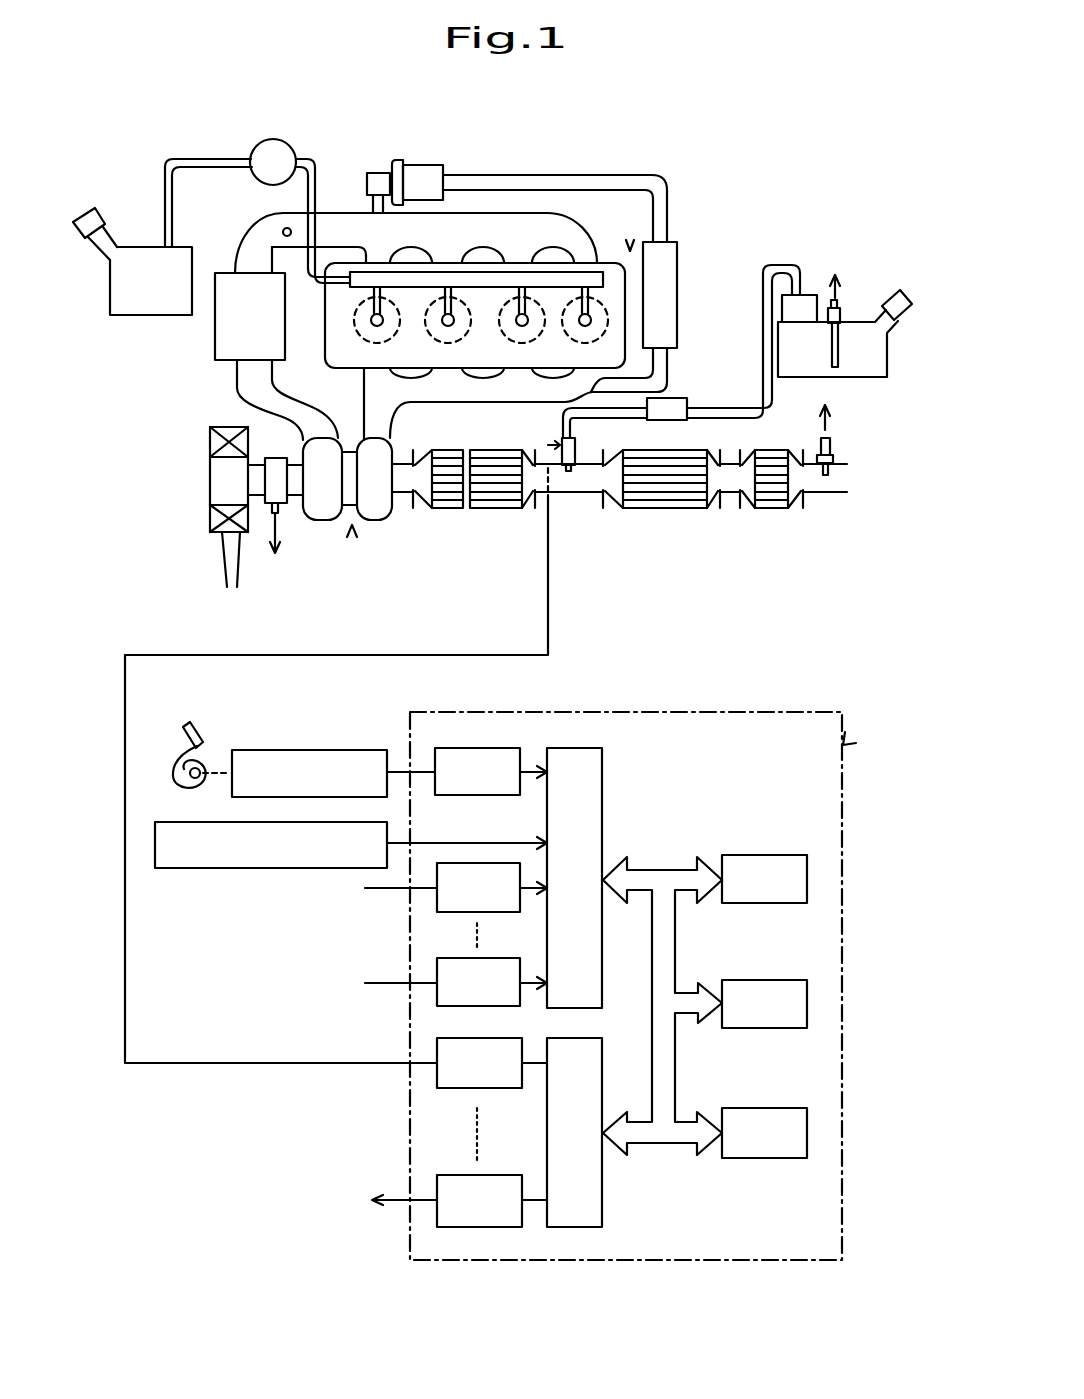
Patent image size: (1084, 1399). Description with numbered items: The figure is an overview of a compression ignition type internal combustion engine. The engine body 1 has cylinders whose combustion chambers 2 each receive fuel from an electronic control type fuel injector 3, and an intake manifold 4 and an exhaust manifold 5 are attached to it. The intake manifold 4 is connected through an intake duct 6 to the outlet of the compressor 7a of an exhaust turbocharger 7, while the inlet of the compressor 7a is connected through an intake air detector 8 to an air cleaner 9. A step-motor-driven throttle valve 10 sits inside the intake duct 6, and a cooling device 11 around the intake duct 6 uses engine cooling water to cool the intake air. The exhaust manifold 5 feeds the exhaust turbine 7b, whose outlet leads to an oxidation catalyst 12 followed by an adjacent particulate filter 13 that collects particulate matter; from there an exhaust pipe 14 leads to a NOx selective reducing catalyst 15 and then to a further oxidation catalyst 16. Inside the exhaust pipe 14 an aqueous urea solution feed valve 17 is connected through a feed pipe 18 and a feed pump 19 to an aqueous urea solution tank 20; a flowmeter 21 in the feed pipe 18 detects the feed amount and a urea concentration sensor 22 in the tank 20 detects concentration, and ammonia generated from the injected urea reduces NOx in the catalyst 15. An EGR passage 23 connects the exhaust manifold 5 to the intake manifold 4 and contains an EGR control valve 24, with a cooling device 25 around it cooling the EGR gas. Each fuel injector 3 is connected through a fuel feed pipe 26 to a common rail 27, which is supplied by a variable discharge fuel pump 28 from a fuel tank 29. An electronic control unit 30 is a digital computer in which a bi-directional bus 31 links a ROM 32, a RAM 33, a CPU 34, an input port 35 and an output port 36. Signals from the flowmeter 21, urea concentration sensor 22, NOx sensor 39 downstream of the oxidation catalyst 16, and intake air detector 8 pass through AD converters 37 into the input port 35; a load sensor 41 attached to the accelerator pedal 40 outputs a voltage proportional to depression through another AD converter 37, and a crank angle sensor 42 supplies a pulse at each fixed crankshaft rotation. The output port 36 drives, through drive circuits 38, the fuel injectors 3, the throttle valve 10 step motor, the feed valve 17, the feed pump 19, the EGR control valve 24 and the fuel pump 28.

The engine body 1 is at (630, 248).
The combustion chamber 2 is at (364, 342).
The fuel injector 3 is at (370, 322).
The intake manifold 4 is at (567, 226).
The exhaust manifold 5 is at (472, 395).
The intake duct 6 is at (243, 258).
The exhaust turbocharger 7 is at (317, 493).
The compressor 7a is at (322, 513).
The exhaust turbine 7b is at (378, 513).
The intake air detector 8 is at (283, 504).
The air cleaner 9 is at (218, 485).
The throttle valve 10 is at (284, 228).
The cooling device 11 is at (226, 343).
The oxidation catalyst 12 is at (450, 495).
The particulate filter 13 is at (502, 495).
The exhaust pipe 14 is at (580, 494).
The NOx selective reducing catalyst 15 is at (668, 495).
The oxidation catalyst 16 is at (775, 495).
The aqueous urea solution feed valve 17 is at (576, 450).
The feed pipe 18 is at (737, 408).
The feed pump 19 is at (812, 295).
The aqueous urea solution tank 20 is at (862, 363).
The flowmeter 21 is at (672, 398).
The urea concentration sensor 22 is at (840, 345).
The EGR passage 23 is at (530, 175).
The EGR control valve 24 is at (375, 173).
The cooling device 25 is at (678, 293).
The fuel feed pipe 26 is at (368, 303).
The common rail 27 is at (486, 271).
The fuel pump 28 is at (268, 139).
The fuel tank 29 is at (128, 307).
The electronic control unit 30 is at (846, 742).
The bi-directional bus 31 is at (660, 870).
The ROM 32 is at (760, 855).
The RAM 33 is at (760, 980).
The CPU 34 is at (762, 1108).
The input port 35 is at (573, 748).
The output port 36 is at (603, 1201).
The AD converter 37 is at (476, 748).
The drive circuit 38 is at (437, 1190).
The NOx sensor 39 is at (835, 457).
The accelerator pedal 40 is at (193, 727).
The load sensor 41 is at (326, 750).
The crank angle sensor 42 is at (246, 870).